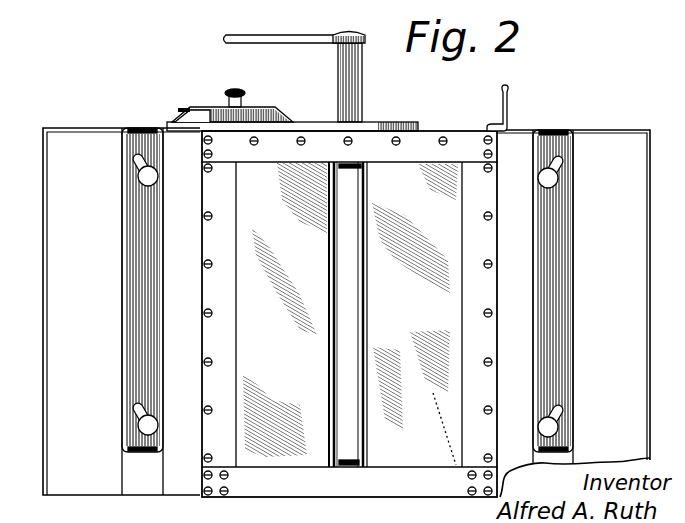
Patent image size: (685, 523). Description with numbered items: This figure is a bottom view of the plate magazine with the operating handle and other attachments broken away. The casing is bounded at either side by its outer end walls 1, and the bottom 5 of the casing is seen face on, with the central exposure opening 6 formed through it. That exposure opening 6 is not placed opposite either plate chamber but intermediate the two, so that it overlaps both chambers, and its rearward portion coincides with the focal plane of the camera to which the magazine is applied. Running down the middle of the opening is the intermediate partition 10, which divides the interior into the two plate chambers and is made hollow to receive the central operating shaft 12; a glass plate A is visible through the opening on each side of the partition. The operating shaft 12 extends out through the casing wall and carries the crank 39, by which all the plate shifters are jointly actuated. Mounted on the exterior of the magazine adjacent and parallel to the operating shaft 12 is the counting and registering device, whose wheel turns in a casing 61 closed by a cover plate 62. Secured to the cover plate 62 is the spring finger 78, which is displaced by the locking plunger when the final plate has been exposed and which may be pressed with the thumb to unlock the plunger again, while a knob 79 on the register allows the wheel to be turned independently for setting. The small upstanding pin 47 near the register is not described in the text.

The outer end walls 1 is at (45, 282).
The bottom 5 is at (84, 313).
The exposure opening 6 is at (378, 468).
The partition 10 is at (362, 302).
The operating shaft 12 is at (355, 92).
The crank 39 is at (284, 38).
The pin 47 is at (509, 92).
The casing 61 is at (388, 122).
The cover plate 62 is at (282, 112).
The spring finger 78 is at (202, 105).
The knob 79 is at (247, 100).
The glass plate A is at (350, 314).